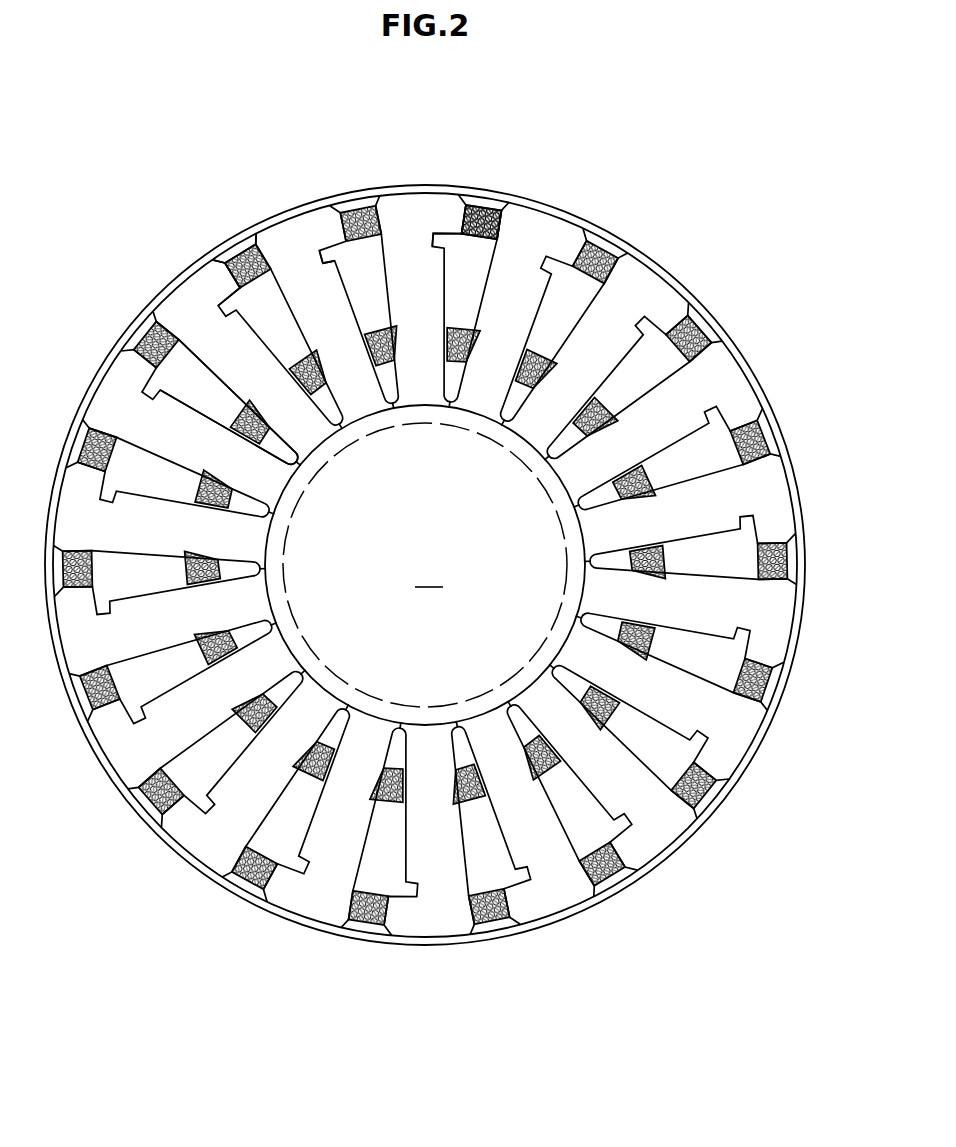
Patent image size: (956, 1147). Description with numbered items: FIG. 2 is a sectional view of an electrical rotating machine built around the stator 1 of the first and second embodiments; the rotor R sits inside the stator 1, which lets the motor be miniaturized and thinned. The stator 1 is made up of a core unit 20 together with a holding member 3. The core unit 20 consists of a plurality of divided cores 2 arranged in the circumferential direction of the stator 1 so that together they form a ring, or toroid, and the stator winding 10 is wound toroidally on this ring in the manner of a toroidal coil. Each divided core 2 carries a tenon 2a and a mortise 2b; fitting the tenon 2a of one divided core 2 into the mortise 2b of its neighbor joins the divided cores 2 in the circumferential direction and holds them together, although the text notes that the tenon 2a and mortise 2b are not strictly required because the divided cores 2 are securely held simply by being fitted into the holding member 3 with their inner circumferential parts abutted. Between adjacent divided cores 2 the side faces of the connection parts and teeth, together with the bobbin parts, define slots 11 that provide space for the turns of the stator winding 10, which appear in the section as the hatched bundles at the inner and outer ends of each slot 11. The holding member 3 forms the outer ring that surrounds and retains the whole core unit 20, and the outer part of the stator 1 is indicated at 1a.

The stator 1 is at (779, 203).
The stator outer portion 1a is at (695, 320).
The divided core 2 is at (727, 383).
The tenon 2a is at (333, 237).
The mortise 2b is at (445, 237).
The holding member 3 is at (623, 233).
The stator winding 10 is at (485, 210).
The slot 11 is at (233, 265).
The core unit 20 is at (646, 296).